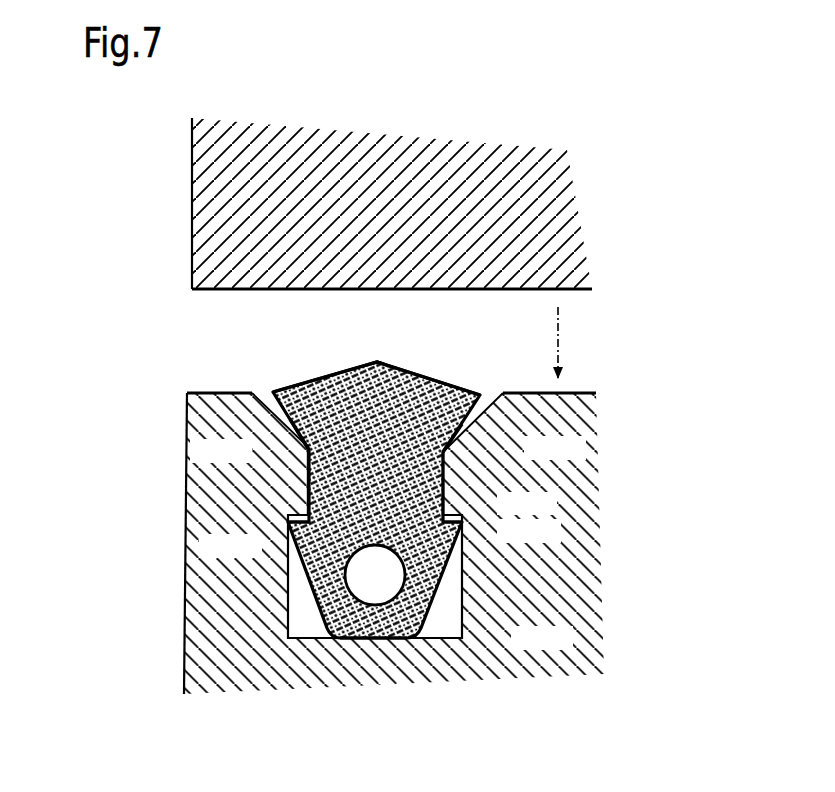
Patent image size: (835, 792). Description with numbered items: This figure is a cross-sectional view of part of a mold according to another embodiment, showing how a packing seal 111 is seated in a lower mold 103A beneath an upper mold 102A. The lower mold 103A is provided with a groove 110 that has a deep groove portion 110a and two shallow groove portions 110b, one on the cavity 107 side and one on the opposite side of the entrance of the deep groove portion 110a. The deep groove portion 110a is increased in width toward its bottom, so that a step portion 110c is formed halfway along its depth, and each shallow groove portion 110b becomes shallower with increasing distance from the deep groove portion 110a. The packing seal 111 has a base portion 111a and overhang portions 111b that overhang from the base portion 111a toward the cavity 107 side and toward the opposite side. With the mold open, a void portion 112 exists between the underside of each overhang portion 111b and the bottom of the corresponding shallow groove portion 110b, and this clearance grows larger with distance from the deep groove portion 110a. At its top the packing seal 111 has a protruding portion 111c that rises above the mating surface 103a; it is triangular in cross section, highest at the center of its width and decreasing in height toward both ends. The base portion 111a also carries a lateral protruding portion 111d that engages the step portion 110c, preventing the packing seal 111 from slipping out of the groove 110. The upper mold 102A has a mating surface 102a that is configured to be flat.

The upper mold 102A is at (568, 190).
The mating surface 102a is at (580, 291).
The lower mold 103A is at (590, 515).
The mating surface 103a is at (580, 395).
The cavity 107 is at (130, 347).
The groove 110 is at (466, 577).
The deep groove portion 110a is at (450, 622).
The shallow groove portion 110b is at (265, 418).
The step portion 110c is at (445, 505).
The packing seal 111 is at (402, 357).
The base portion 111a is at (372, 640).
The overhang portion 111b is at (295, 387).
The protruding portion 111c is at (376, 360).
The lateral protruding portion 111d is at (288, 524).
The void portion 112 is at (266, 400).